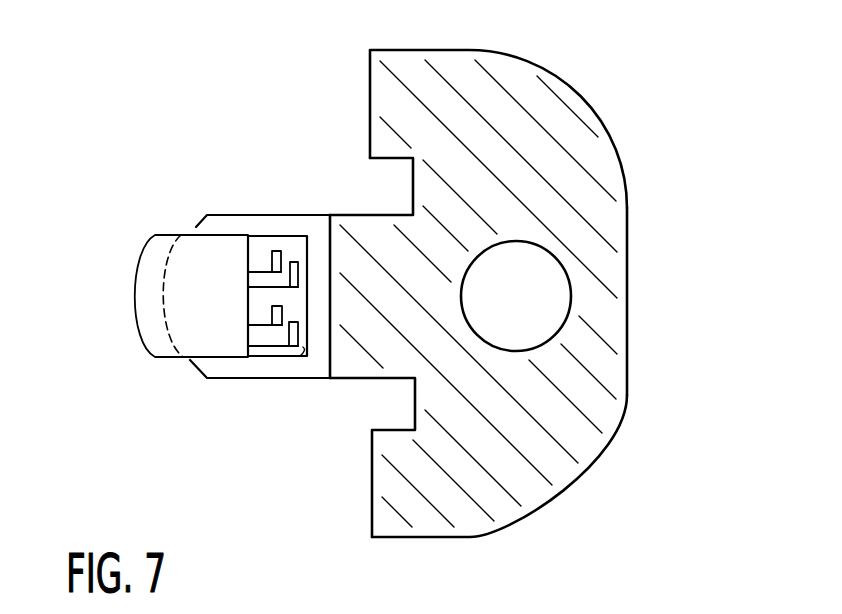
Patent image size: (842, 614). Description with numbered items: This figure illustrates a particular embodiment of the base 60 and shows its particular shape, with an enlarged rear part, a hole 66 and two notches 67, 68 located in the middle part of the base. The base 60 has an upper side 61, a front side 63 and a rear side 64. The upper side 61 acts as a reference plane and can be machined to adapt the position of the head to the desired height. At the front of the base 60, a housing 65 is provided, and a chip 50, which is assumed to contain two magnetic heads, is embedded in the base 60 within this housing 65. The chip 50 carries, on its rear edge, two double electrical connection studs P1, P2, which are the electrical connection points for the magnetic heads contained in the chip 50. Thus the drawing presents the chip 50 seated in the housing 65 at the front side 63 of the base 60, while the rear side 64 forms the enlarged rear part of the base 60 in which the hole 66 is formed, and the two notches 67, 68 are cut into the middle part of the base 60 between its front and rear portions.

The chip 50 is at (139, 349).
The base 60 is at (583, 80).
The upper side 61 is at (538, 459).
The front side 63 is at (202, 222).
The rear side 64 is at (628, 260).
The housing 65 is at (293, 347).
The hole 66 is at (558, 304).
The notch 67 is at (390, 406).
The notch 68 is at (382, 189).
The double electrical connection stud P1 is at (277, 325).
The double electrical connection stud P2 is at (292, 264).